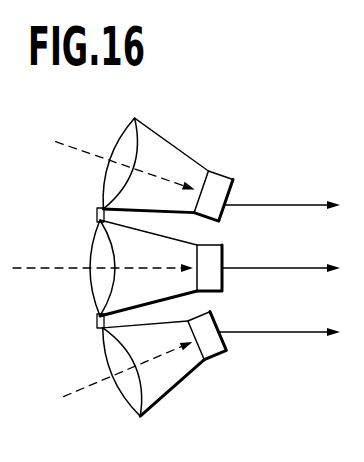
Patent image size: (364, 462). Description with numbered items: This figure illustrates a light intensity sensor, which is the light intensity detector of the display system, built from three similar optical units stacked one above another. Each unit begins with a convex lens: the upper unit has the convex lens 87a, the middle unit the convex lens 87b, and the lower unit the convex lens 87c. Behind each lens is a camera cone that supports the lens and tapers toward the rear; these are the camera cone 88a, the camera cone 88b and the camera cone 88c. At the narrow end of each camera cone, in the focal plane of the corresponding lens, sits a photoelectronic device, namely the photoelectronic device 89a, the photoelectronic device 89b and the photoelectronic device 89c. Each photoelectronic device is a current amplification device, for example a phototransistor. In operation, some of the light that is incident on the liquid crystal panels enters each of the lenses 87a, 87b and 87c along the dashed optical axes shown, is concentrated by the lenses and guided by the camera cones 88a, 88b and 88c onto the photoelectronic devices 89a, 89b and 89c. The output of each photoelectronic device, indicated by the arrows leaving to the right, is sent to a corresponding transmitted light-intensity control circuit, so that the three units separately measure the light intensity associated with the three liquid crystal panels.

The convex lens 87a is at (125, 143).
The camera cone 88a is at (185, 147).
The photoelectronic device 89a is at (228, 176).
The convex lens 87b is at (100, 290).
The camera cone 88b is at (177, 238).
The photoelectronic device 89b is at (213, 257).
The convex lens 87c is at (130, 399).
The camera cone 88c is at (182, 384).
The photoelectronic device 89c is at (227, 350).